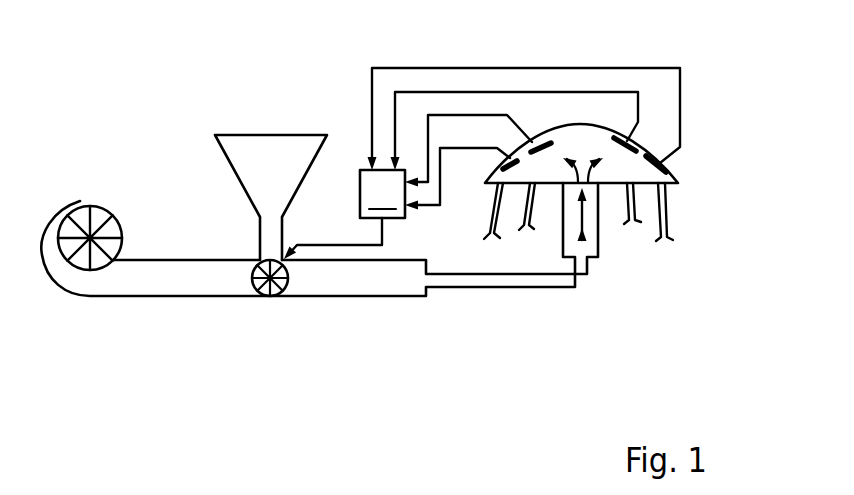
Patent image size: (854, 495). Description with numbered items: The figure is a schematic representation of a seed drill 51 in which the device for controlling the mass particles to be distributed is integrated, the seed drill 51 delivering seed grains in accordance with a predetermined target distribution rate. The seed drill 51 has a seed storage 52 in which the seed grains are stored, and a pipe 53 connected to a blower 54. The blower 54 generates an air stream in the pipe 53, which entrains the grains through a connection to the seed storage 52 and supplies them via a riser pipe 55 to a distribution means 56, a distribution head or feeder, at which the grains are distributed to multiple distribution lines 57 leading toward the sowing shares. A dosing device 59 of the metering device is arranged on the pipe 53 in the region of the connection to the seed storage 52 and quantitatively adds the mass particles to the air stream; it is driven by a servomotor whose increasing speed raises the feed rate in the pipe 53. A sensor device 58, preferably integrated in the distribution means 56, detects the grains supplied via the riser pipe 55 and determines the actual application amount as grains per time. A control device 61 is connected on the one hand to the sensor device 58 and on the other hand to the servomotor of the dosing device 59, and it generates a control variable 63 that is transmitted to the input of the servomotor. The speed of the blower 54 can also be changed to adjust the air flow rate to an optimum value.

The seed drill 51 is at (179, 376).
The seed storage 52 is at (223, 155).
The pipe 53 is at (407, 297).
The blower 54 is at (108, 207).
The riser pipe 55 is at (600, 225).
The distribution means 56 is at (706, 105).
The distribution lines 57 is at (499, 214).
The sensor device 58 is at (508, 163).
The dosing device 59 is at (296, 315).
The control device 61 is at (520, 143).
The control variable 63 is at (342, 243).